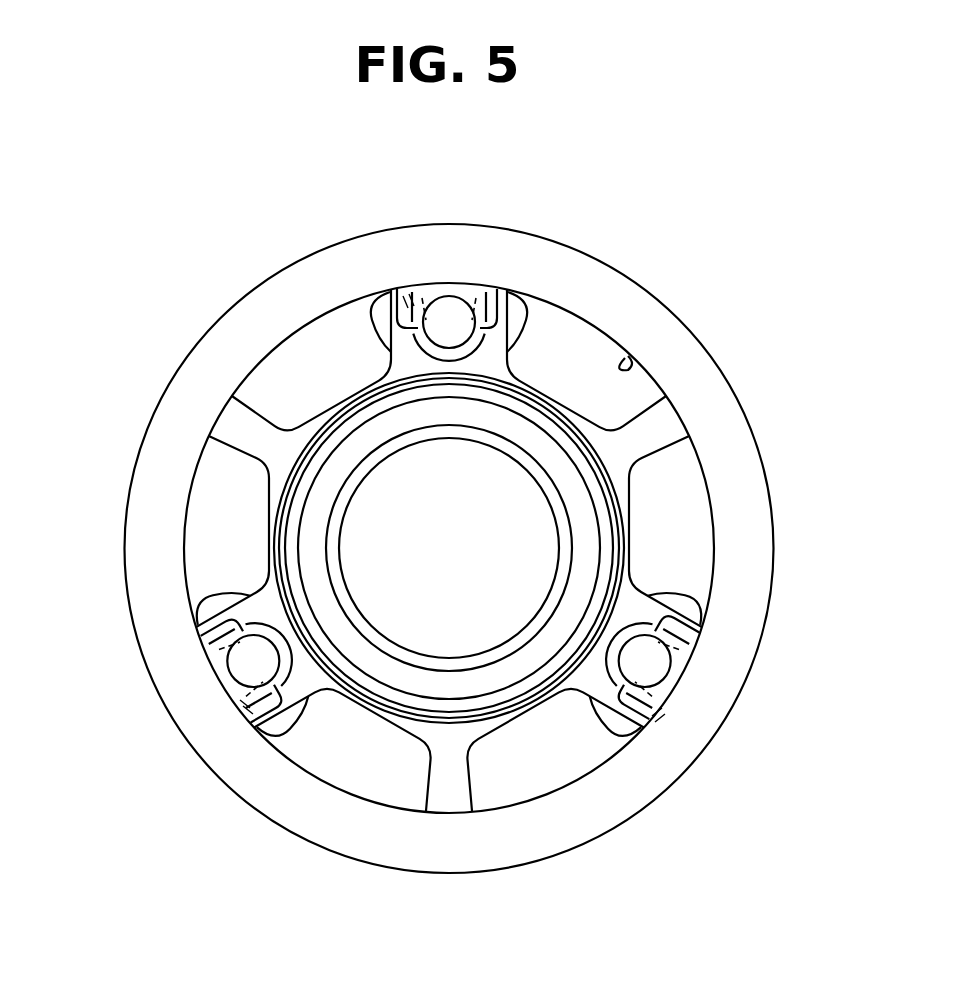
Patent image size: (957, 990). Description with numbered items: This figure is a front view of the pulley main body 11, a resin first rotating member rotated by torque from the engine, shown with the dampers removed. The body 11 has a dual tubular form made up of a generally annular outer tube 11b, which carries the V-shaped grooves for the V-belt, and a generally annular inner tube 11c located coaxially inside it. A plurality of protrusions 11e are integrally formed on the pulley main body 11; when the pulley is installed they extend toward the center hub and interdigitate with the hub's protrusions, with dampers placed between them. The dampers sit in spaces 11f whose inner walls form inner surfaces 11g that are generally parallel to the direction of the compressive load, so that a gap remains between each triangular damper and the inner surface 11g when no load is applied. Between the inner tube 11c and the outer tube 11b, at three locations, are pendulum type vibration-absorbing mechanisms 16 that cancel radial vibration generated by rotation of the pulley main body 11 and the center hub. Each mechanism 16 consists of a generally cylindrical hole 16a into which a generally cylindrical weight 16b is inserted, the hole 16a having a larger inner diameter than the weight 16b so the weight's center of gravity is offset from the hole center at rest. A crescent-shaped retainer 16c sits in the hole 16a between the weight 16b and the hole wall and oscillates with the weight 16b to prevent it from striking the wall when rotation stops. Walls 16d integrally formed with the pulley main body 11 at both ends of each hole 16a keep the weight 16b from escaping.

The pulley main body 11 is at (210, 365).
The outer tube 11b is at (752, 523).
The inner tube 11c is at (629, 557).
The protrusions 11e is at (235, 420).
The space 11f is at (587, 357).
The inner surface 11g is at (625, 358).
The pendulum type vibration-absorbing mechanism 16 is at (487, 290).
The hole 16a is at (530, 292).
The weight 16b is at (435, 320).
The retainer 16c is at (410, 337).
The walls 16d is at (440, 290).